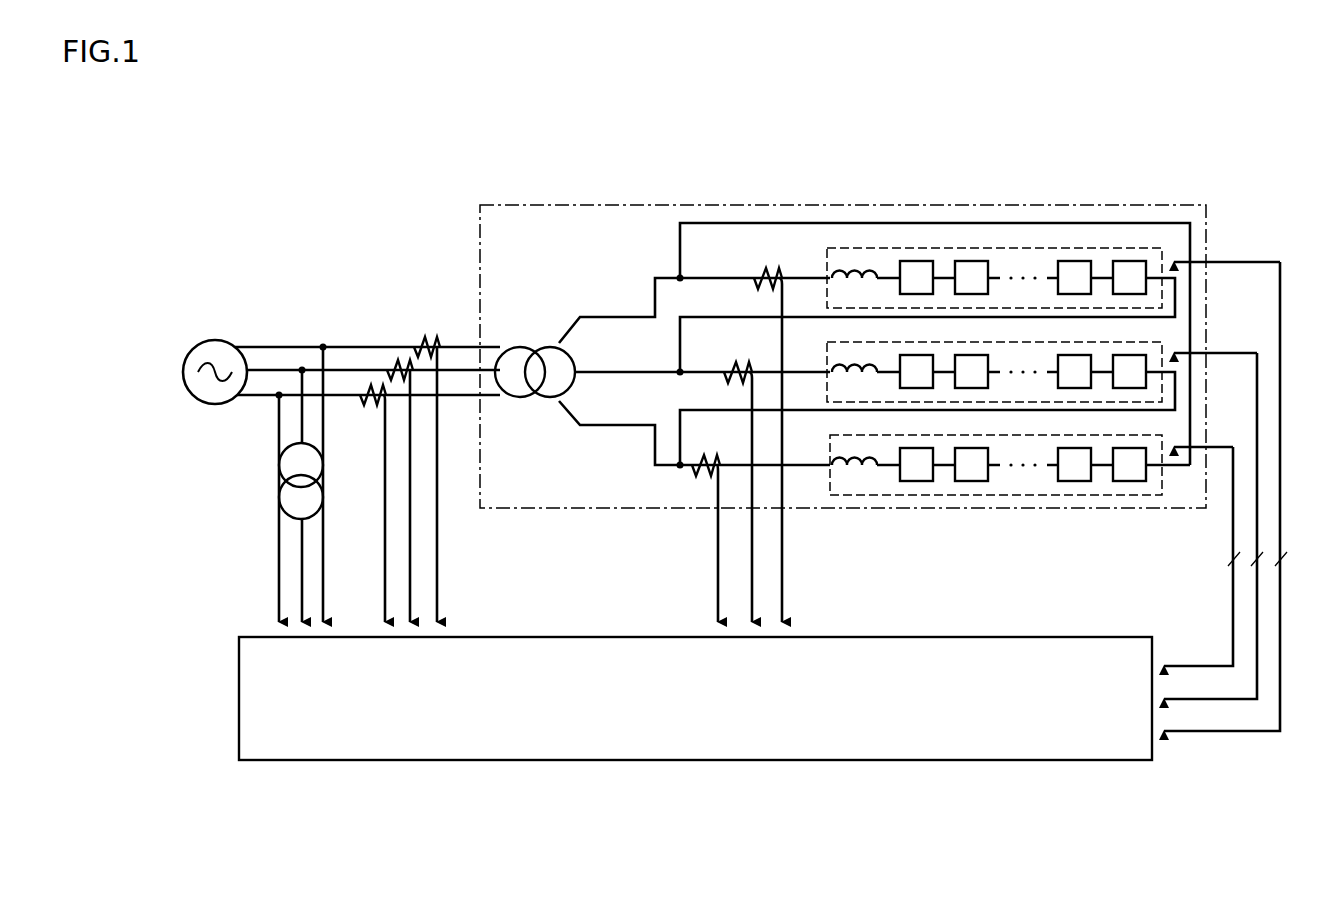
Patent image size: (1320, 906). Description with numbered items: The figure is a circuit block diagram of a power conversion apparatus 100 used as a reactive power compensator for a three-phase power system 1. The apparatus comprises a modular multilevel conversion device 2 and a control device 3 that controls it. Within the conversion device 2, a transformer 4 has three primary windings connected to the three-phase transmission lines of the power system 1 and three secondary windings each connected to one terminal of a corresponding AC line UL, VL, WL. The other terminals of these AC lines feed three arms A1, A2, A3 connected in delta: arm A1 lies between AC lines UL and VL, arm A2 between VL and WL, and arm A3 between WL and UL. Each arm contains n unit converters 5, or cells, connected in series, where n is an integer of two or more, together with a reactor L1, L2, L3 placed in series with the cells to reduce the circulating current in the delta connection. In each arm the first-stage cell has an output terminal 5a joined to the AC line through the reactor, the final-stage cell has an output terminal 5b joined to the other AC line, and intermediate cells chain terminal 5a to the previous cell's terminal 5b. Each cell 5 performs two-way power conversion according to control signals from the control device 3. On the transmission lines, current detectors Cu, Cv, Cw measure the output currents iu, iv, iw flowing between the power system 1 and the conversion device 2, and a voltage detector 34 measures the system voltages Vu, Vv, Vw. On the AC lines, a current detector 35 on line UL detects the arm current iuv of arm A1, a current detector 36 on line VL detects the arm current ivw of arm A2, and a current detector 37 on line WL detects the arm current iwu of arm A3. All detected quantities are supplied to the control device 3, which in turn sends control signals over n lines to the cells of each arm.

The power system 1 is at (200, 343).
The modular multilevel conversion device (MMC) 2 is at (1158, 206).
The control device 3 is at (1118, 761).
The transformer 4 is at (520, 397).
The unit converter (cell) 5 is at (1011, 371).
The output terminal 5a is at (956, 483).
The output terminal 5b is at (989, 483).
The voltage detector 34 is at (280, 462).
The current detector 35 is at (764, 273).
The current detector 36 is at (733, 367).
The current detector 37 is at (702, 460).
The power conversion apparatus 100 is at (396, 230).
The current detector Cw is at (364, 390).
The current detector Cv is at (394, 367).
The current detector Cu is at (426, 342).
The AC line UL is at (607, 315).
The AC line VL is at (607, 369).
The AC line WL is at (607, 422).
The reactor L1 is at (834, 271).
The reactor L2 is at (834, 365).
The reactor L3 is at (834, 458).
The arm A1 is at (826, 300).
The arm A2 is at (826, 394).
The arm A3 is at (826, 487).
The system voltage Vw is at (279, 545).
The system voltage Vv is at (302, 580).
The system voltage Vu is at (323, 556).
The output current iw is at (385, 529).
The output current iv is at (410, 562).
The output current iu is at (437, 590).
The arm current ivw is at (752, 536).
The arm current iwu is at (718, 575).
The arm current iuv is at (782, 565).
The number of cells n is at (1234, 496).